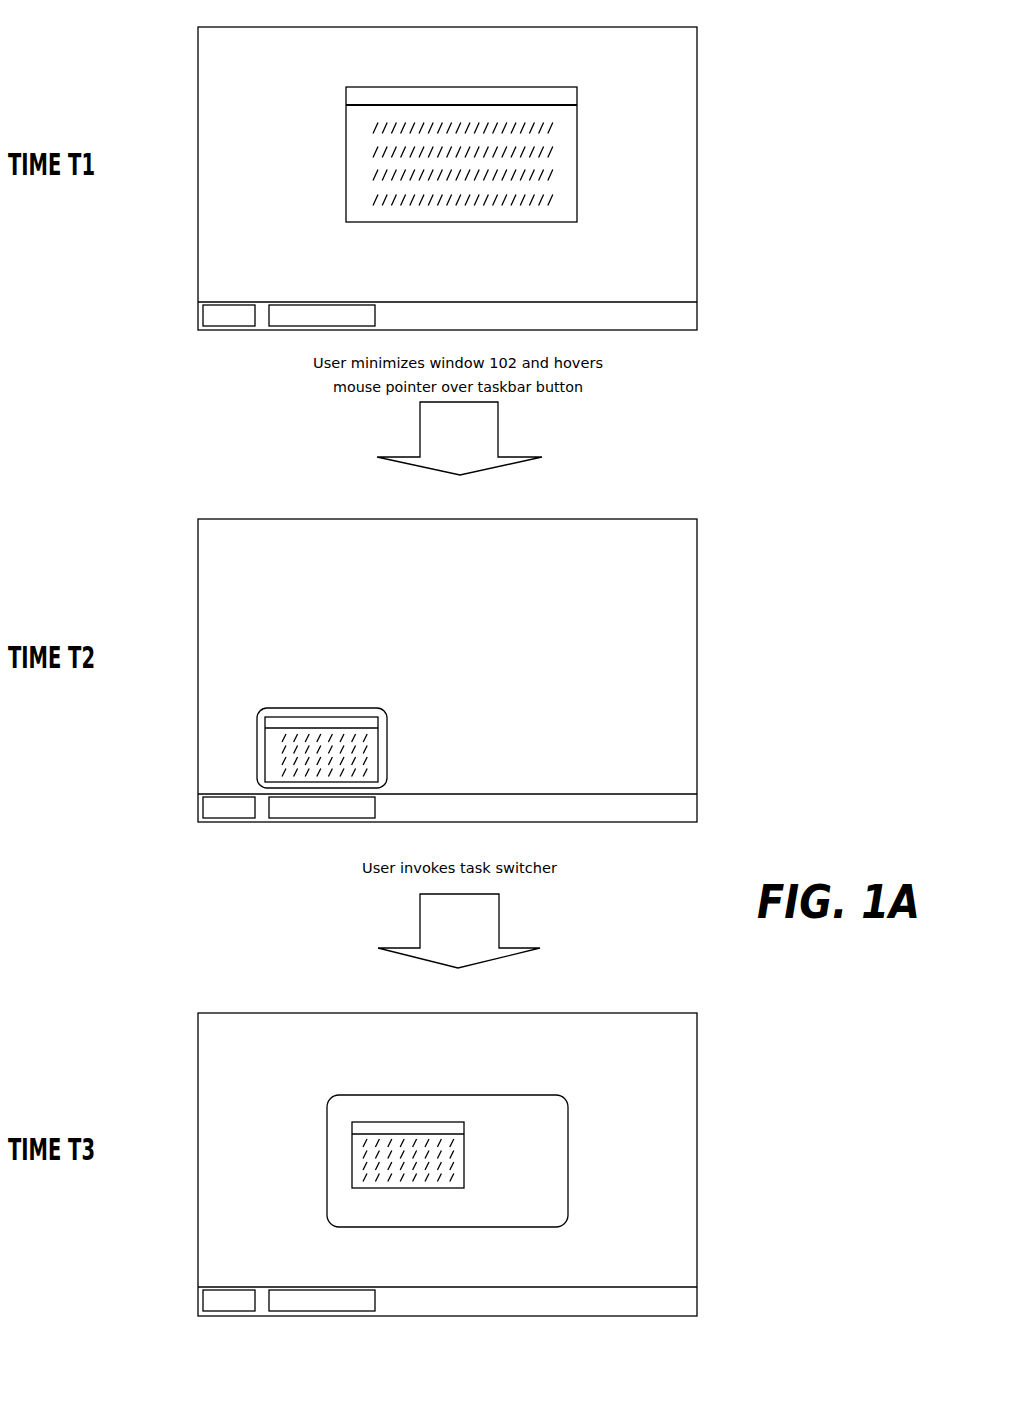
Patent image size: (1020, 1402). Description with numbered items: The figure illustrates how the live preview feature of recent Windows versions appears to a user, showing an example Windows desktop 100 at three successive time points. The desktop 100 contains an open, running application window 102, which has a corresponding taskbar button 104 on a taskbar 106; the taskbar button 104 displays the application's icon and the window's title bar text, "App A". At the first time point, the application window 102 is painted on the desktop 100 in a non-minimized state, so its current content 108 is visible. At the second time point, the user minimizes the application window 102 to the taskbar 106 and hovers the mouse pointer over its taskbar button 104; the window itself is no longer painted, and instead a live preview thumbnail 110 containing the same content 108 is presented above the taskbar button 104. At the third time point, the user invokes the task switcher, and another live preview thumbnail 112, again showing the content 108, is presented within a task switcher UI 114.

The Windows desktop 100 is at (651, 26).
The application window 102 is at (493, 143).
The taskbar button 104 is at (376, 313).
The taskbar 106 is at (614, 302).
The window content 108 is at (506, 164).
The live preview thumbnail 110 is at (361, 710).
The task switcher live preview thumbnail 112 is at (448, 1122).
The task switcher UI 114 is at (447, 1161).